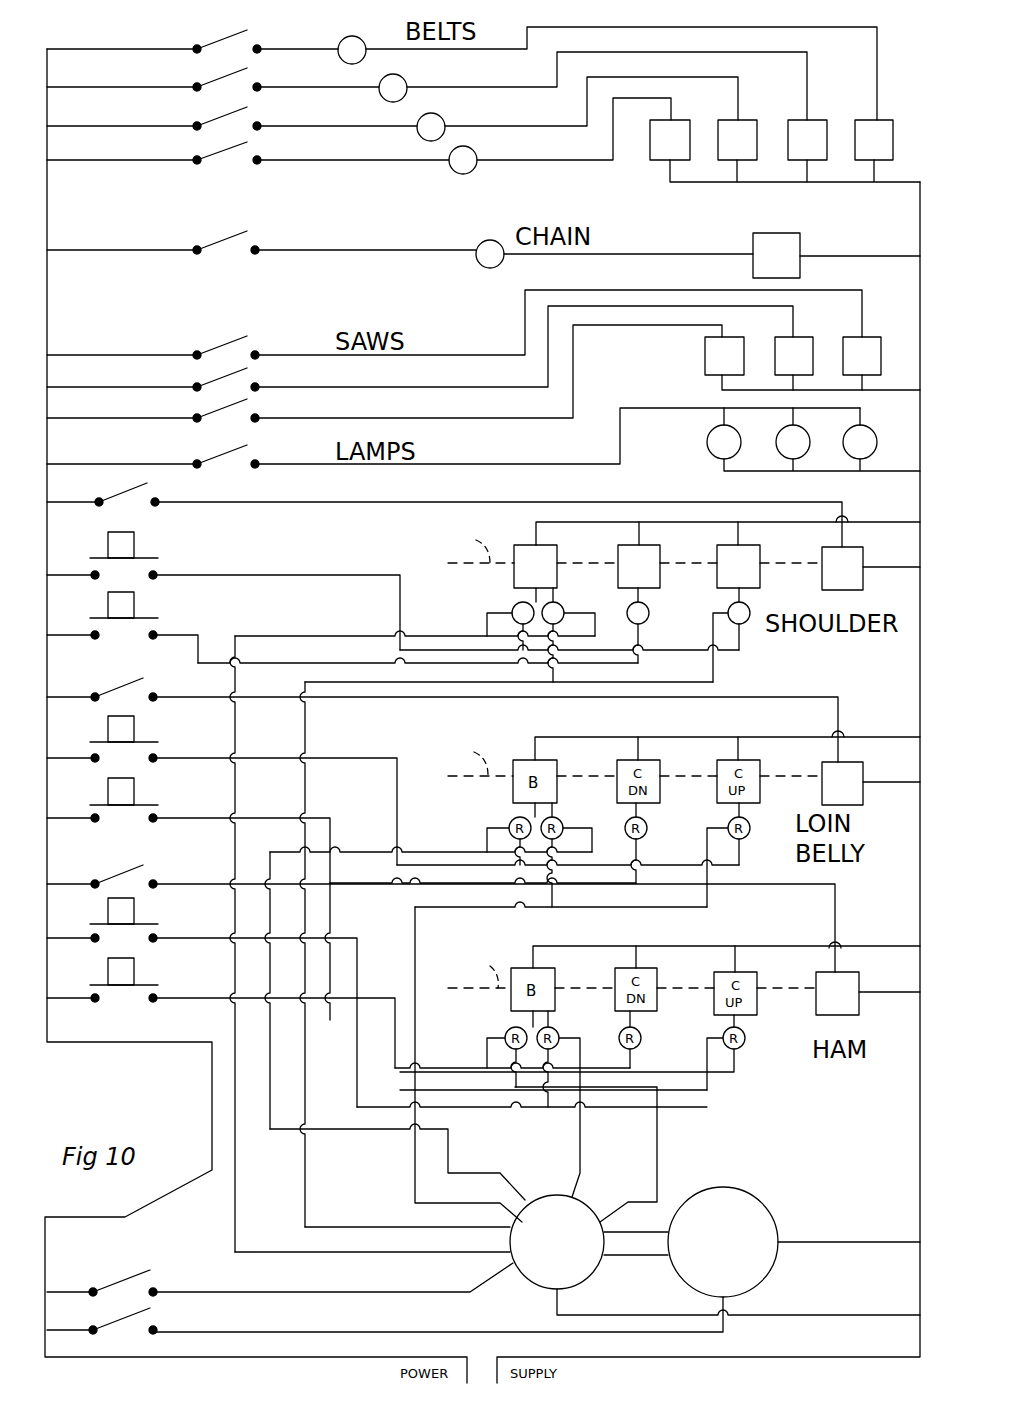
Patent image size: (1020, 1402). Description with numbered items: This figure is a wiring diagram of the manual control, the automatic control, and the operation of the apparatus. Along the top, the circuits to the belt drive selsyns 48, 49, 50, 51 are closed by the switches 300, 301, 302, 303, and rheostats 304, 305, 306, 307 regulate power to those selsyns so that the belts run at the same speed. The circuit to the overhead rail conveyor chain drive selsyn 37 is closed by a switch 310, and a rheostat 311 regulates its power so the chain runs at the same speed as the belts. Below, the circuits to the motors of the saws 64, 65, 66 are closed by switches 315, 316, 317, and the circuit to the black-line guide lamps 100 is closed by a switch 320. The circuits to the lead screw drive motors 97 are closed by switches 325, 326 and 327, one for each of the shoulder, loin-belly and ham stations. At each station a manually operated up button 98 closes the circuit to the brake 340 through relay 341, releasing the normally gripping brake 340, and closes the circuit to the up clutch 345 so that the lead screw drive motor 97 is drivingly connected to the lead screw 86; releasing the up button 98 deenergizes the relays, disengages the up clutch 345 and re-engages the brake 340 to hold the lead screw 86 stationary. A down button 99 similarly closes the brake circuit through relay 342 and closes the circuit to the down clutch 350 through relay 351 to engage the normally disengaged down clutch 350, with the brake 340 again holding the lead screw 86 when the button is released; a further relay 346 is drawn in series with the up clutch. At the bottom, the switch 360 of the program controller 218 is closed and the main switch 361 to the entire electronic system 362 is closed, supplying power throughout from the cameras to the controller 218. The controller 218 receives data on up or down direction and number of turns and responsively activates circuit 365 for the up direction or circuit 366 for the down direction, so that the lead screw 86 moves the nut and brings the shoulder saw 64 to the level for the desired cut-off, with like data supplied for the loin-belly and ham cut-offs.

The switch 300 is at (230, 38).
The switch 301 is at (212, 82).
The switch 302 is at (224, 120).
The switch 303 is at (213, 154).
The rheostat 304 is at (354, 36).
The rheostat 305 is at (413, 72).
The rheostat 306 is at (450, 110).
The rheostat 307 is at (486, 143).
The switch 310 is at (232, 226).
The rheostat 311 is at (480, 246).
The switch 315 is at (230, 338).
The switch 316 is at (214, 372).
The switch 317 is at (208, 404).
The switch 320 is at (220, 452).
The switch 325 is at (128, 486).
The switch 326 is at (124, 684).
The switch 327 is at (124, 872).
The belt drive selsyn 48 is at (670, 140).
The belt drive selsyn 49 is at (737, 140).
The belt drive selsyn 50 is at (807, 140).
The belt drive selsyn 51 is at (874, 140).
The chain drive selsyn 37 is at (776, 255).
The shoulder saw 64 is at (812, 363).
The saw 65 is at (794, 363).
The saw 66 is at (862, 363).
The black-line guide lamps 100 is at (813, 439).
The up button 98 is at (134, 545).
The down button 99 is at (134, 605).
The lead screw 86 is at (617, 751).
The brake 340 is at (557, 556).
The relay 341 is at (564, 604).
The relay 342 is at (512, 604).
The up clutch 345 is at (760, 556).
The relay 346 is at (750, 605).
The down clutch 350 is at (660, 556).
The relay 351 is at (649, 605).
The lead screw drive motor 97 is at (868, 765).
The program controller switch 360 is at (136, 1274).
The main switch 361 is at (118, 1330).
The electronic system 362 is at (770, 1215).
The up direction circuit 365 is at (330, 1232).
The down direction circuit 366 is at (233, 1216).
The program controller 218 is at (542, 1290).